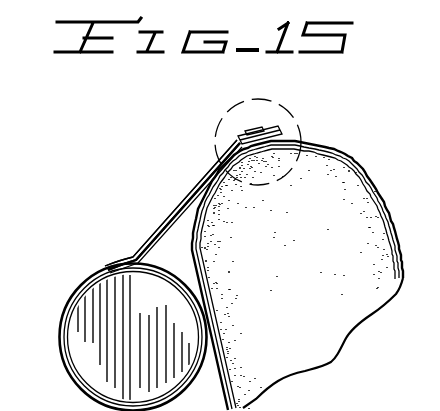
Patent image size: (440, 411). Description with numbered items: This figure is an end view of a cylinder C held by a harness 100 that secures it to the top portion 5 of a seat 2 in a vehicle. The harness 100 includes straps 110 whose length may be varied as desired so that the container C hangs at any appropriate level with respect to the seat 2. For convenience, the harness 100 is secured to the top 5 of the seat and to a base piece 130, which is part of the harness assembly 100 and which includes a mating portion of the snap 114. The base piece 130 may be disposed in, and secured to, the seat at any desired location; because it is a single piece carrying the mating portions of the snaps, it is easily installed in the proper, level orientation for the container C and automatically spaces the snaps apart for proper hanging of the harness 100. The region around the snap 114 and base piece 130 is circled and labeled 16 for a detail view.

The seat 2 is at (320, 356).
The top portion of the seat 5 is at (340, 152).
The detail area shown in FIG. 16 is at (231, 110).
The harness 100 is at (154, 238).
The straps 110 is at (182, 204).
The snap 114 is at (262, 127).
The base piece 130 is at (284, 132).
The cylinder C is at (65, 352).